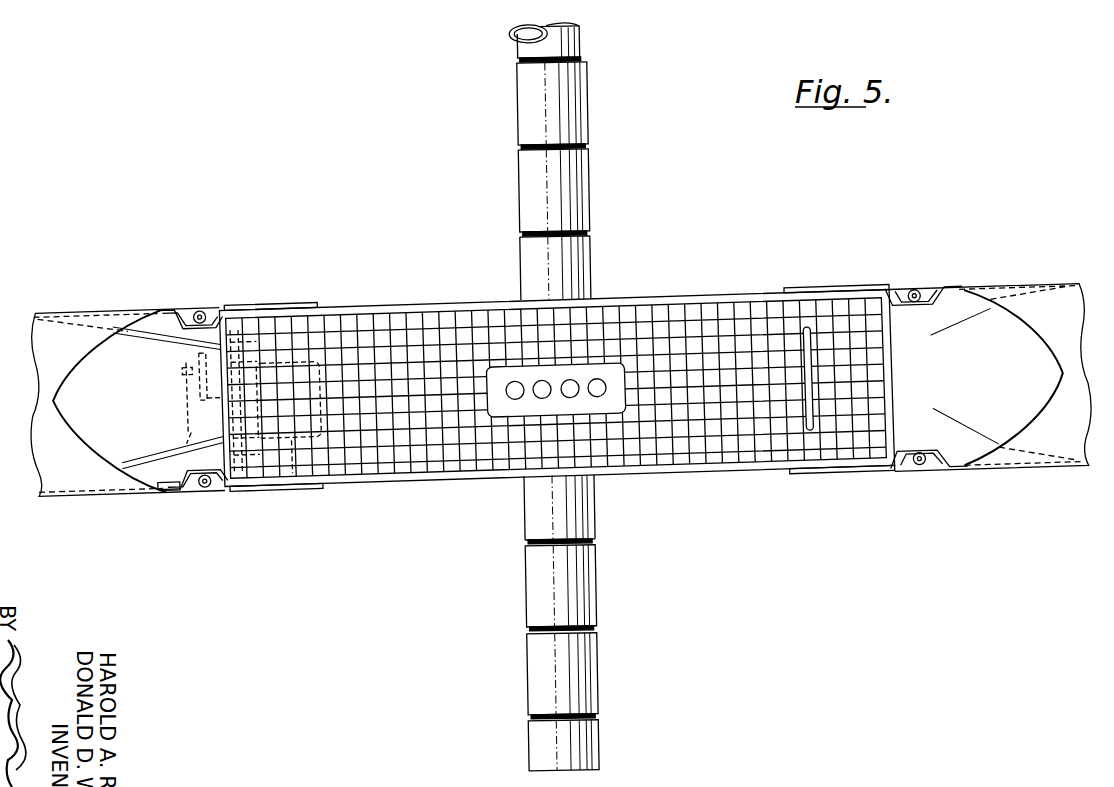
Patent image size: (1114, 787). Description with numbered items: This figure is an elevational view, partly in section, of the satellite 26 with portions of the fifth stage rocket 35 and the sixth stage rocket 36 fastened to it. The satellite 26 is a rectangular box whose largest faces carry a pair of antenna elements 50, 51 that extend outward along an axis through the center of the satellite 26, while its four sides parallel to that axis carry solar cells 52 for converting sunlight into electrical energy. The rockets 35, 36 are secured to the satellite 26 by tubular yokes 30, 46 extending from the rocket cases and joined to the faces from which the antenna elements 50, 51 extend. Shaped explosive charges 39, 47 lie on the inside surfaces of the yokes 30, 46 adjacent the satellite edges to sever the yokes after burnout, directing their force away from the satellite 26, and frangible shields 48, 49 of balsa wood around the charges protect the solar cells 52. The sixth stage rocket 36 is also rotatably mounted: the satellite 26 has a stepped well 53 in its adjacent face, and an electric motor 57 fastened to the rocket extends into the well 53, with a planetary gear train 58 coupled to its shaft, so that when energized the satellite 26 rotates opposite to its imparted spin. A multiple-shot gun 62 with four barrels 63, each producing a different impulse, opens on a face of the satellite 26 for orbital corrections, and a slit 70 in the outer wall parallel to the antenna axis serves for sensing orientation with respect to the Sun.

The satellite 26 is at (879, 350).
The tubular yoke 30 is at (1063, 464).
The fifth stage rocket 35 is at (1001, 398).
The sixth stage rocket 36 is at (138, 399).
The explosive charge 39 is at (923, 304).
The tubular yoke 46 is at (82, 318).
The explosive charge 47 is at (207, 302).
The shield 48 is at (900, 303).
The shield 49 is at (185, 300).
The antenna element 50 is at (583, 208).
The antenna element 51 is at (584, 603).
The solar cells 52 is at (850, 467).
The well 53 is at (315, 433).
The electric motor 57 is at (285, 429).
The planetary gear train 58 is at (162, 471).
The gun 62 is at (613, 370).
The barrels 63 is at (573, 396).
The slit 70 is at (801, 451).